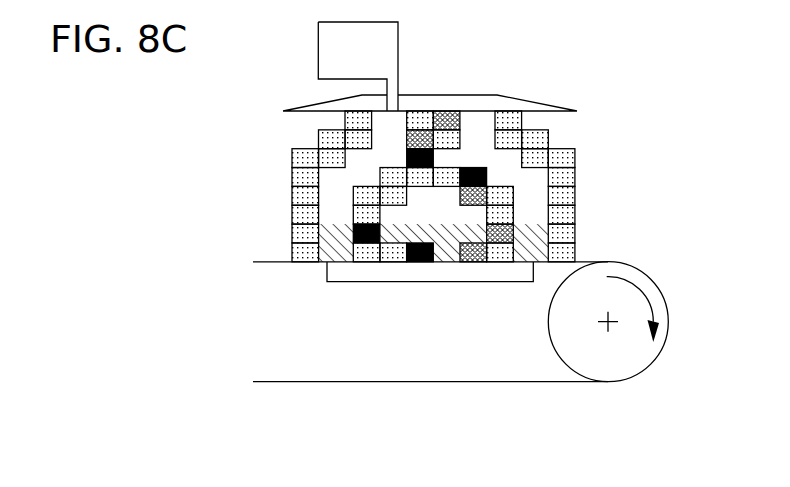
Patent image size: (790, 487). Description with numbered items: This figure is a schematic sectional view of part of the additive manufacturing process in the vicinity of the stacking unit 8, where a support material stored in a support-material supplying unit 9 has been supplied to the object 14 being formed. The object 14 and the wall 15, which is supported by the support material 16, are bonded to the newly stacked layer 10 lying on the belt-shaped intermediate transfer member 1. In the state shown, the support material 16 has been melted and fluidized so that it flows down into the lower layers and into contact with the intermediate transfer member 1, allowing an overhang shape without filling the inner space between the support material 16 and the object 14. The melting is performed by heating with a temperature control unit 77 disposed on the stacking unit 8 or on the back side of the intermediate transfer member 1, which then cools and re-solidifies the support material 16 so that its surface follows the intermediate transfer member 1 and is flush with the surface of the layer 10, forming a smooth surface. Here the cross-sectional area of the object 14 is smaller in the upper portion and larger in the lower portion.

The intermediate transfer member 1 is at (271, 264).
The stacking unit 8 is at (519, 68).
The support-material supplying unit 9 is at (353, 52).
The layer 10 is at (391, 256).
The object 14 is at (498, 192).
The wall 15 is at (562, 197).
The support material 16 is at (575, 240).
The temperature control unit 77 is at (481, 272).